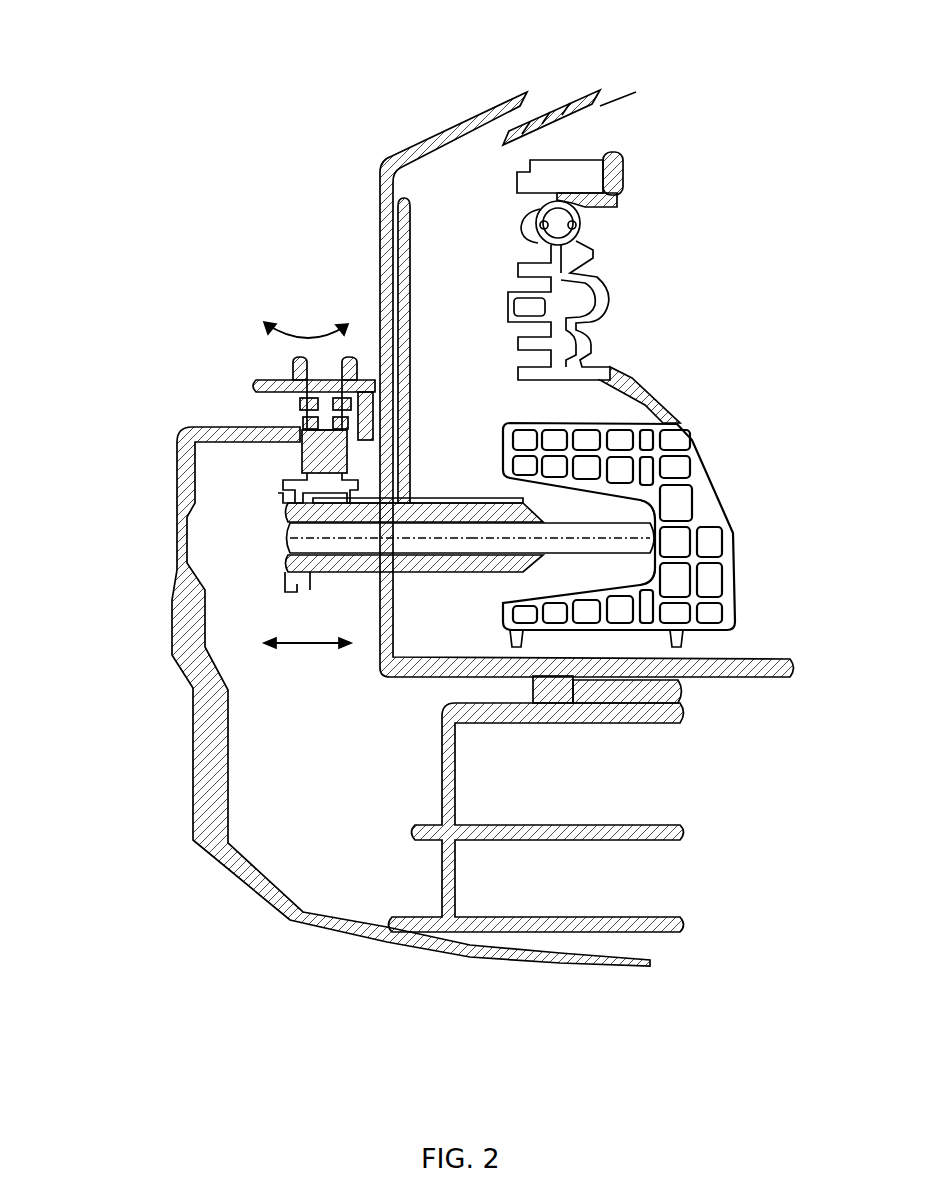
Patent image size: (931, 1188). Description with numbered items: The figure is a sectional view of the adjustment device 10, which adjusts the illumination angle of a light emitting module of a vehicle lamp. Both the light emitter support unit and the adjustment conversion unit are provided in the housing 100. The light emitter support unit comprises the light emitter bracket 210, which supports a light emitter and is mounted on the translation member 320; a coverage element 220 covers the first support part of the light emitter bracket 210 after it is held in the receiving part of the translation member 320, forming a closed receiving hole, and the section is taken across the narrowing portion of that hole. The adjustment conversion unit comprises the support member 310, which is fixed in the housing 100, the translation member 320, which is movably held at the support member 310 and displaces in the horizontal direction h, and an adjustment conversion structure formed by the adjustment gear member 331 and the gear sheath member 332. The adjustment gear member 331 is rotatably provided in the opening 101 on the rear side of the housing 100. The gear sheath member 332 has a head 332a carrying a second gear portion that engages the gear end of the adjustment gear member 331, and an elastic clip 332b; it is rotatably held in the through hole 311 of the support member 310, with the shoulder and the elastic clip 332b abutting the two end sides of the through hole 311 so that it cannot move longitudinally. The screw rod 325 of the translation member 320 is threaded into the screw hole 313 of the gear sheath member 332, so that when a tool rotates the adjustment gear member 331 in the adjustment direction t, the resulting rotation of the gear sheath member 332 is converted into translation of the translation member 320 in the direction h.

The adjustment device 10 is at (272, 205).
The housing 100 is at (205, 830).
The opening 101 is at (312, 420).
The light emitter bracket 210 is at (603, 190).
The coverage element 220 is at (572, 274).
The support member 310 is at (647, 833).
The through hole 311 is at (335, 539).
The screw hole 313 is at (330, 525).
The translation member 320 is at (637, 477).
The screw rod 325 is at (593, 543).
The adjustment gear member 331 is at (310, 446).
The gear sheath member 332 is at (315, 568).
The head 332a is at (260, 491).
The elastic clip 332b is at (610, 542).